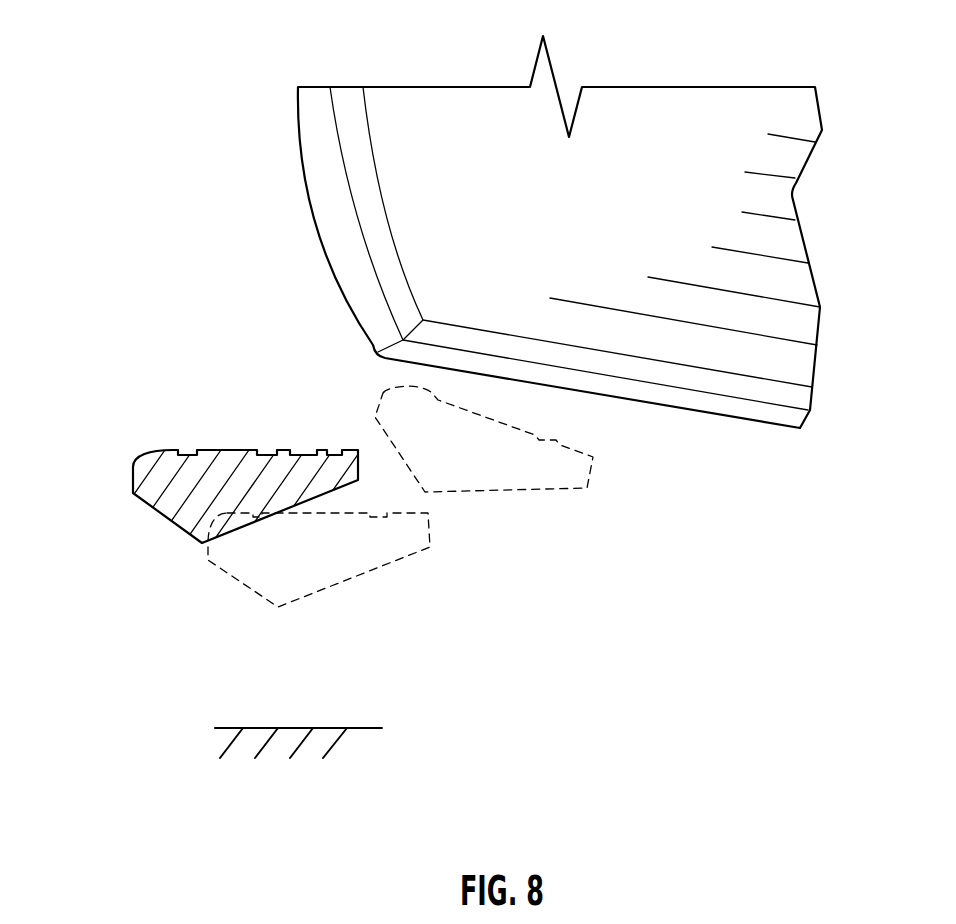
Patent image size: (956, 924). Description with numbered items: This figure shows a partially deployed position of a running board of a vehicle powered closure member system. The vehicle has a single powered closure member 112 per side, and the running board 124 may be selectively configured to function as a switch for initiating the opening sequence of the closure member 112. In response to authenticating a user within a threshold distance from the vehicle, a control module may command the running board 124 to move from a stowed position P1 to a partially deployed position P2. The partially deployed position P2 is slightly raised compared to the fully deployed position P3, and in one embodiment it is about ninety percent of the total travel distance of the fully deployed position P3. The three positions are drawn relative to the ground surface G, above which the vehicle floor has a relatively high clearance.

The powered closure member 112 is at (300, 148).
The running board 124 is at (320, 514).
The stowed position P1 is at (383, 391).
The partially deployed position P2 is at (129, 484).
The fully deployed position P3 is at (241, 587).
The ground surface G is at (258, 728).